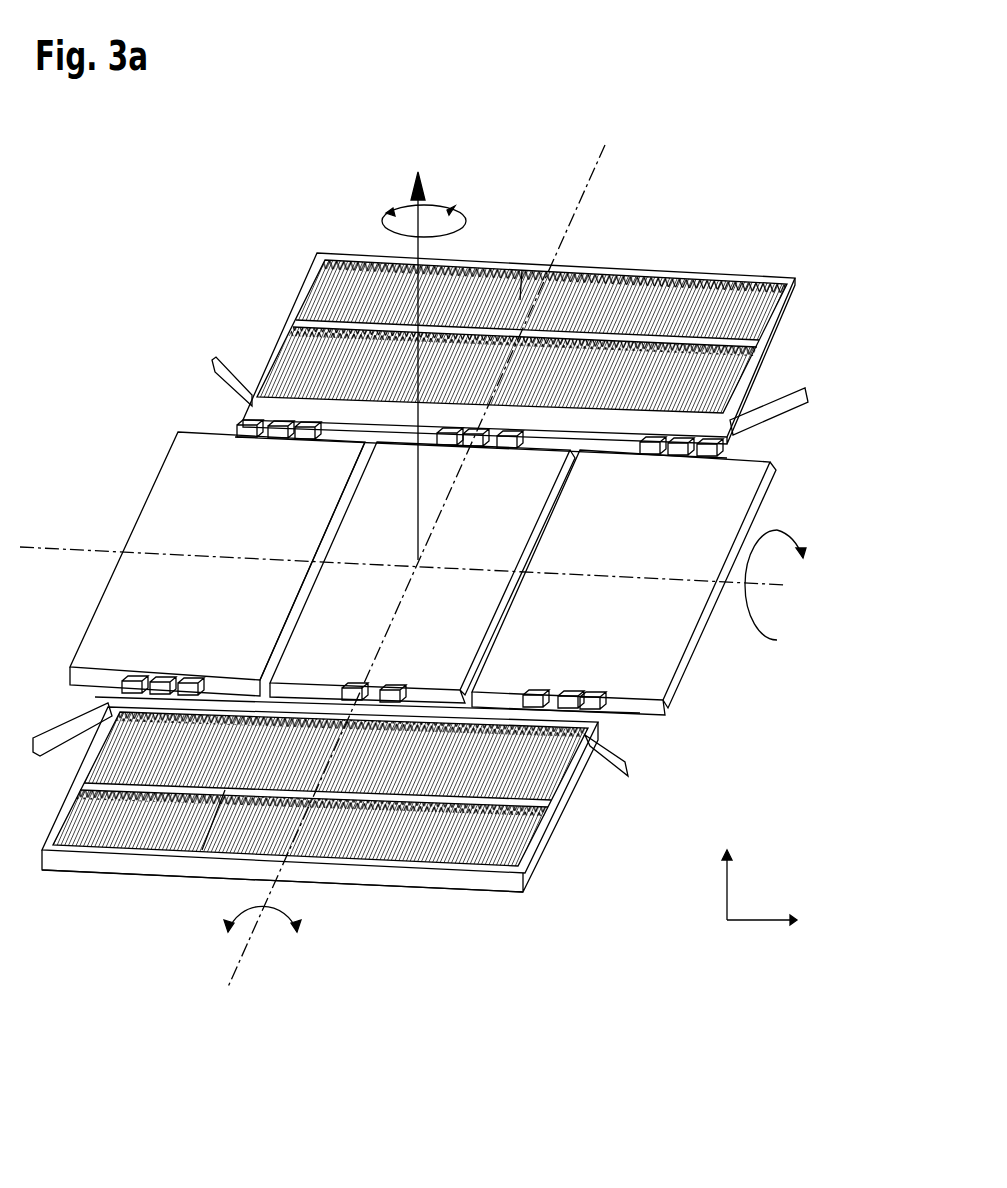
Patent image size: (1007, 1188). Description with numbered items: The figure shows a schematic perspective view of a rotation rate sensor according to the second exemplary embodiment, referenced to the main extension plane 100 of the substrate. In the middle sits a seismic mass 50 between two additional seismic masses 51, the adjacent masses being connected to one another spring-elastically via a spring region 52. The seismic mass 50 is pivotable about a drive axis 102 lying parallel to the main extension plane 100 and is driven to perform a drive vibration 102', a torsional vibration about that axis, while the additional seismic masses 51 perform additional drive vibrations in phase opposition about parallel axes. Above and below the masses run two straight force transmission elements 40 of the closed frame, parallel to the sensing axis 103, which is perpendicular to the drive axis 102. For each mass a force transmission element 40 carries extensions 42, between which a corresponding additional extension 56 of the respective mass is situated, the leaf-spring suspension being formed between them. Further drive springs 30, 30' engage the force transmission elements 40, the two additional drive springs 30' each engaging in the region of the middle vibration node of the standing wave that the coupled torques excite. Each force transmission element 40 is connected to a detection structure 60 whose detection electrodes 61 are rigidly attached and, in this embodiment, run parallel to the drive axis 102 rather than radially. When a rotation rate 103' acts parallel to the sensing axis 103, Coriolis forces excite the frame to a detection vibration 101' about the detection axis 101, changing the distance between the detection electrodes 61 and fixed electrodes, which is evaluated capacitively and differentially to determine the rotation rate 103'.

The support arm 30 is at (430, 557).
The additional drive spring 30' is at (361, 580).
The force transmission element 40 is at (122, 848).
The extension 42 is at (605, 705).
The seismic mass 50 is at (338, 610).
The additional seismic mass 51 is at (165, 513).
The spring region 52 is at (342, 512).
The additional extension 56 is at (600, 688).
The detection structure 60 is at (727, 282).
The detection electrode 61 is at (647, 280).
The main extension plane 100 is at (785, 908).
The detection axis 101 is at (379, 349).
The detection vibration 101' is at (375, 213).
The drive axis 102 is at (416, 587).
The drive vibration 102' is at (329, 938).
The sensing axis 103 is at (429, 616).
The rotation rate 103' is at (797, 558).